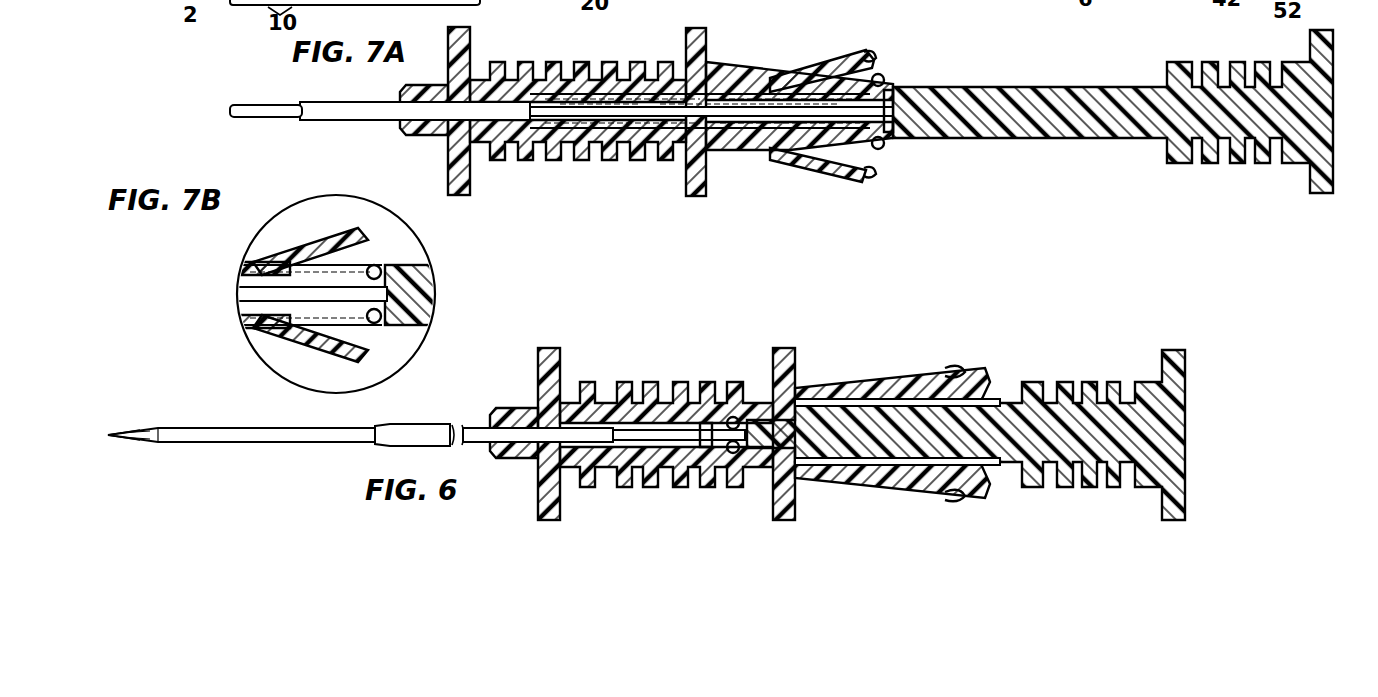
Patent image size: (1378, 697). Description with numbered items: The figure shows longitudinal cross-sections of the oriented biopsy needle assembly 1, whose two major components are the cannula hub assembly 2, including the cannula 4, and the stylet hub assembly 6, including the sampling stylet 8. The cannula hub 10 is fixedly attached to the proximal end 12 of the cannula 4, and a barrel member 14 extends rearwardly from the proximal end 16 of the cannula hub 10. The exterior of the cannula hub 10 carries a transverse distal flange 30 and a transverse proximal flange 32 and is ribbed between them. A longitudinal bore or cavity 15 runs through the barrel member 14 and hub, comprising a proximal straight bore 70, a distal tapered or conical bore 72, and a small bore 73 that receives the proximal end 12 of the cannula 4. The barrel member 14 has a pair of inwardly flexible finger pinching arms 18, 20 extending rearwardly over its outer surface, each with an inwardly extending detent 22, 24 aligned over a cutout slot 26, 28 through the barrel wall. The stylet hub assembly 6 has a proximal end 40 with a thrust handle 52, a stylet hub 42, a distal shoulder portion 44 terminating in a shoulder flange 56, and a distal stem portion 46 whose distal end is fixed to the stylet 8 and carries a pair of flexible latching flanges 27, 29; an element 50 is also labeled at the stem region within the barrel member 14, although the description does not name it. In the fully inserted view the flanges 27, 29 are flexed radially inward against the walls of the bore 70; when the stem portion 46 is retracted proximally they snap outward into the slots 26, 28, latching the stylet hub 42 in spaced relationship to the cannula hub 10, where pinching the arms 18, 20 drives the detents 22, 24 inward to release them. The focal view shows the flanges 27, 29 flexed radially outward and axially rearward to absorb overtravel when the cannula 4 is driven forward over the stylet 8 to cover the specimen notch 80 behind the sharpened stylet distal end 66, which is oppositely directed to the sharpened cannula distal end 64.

In FIG. 7A, the oriented biopsy needle assembly 1 is at (805, 190).
In FIG. 6, the oriented biopsy needle assembly 1 is at (478, 499).
In FIG. 7A, the cannula hub assembly 2 is at (390, 150).
In FIG. 6, the cannula hub assembly 2 is at (627, 326).
In FIG. 7A, the cannula 4 is at (352, 100).
In FIG. 7A, the stylet hub assembly 6 is at (1222, 189).
In FIG. 6, the stylet hub assembly 6 is at (1072, 356).
In FIG. 7A, the sampling stylet 8 is at (256, 118).
In FIG. 6, the sampling stylet 8 is at (358, 428).
In FIG. 7A, the cannula hub 10 is at (598, 184).
In FIG. 7A, the proximal end of the cannula 12 is at (500, 122).
In FIG. 6, the proximal end of the cannula 12 is at (510, 432).
In FIG. 7A, the barrel member 14 is at (838, 70).
In FIG. 6, the barrel member 14 is at (893, 497).
In FIG. 7A, the longitudinal bore or cavity 15 is at (720, 96).
In FIG. 6, the longitudinal bore or cavity 15 is at (838, 473).
In FIG. 7A, the proximal end of the cannula hub 16 is at (712, 48).
In FIG. 6, the proximal end of the cannula hub 16 is at (793, 370).
In FIG. 7A, the finger pinching arm 18 is at (787, 110).
In FIG. 7B, the finger pinching arm 18 is at (318, 238).
In FIG. 6, the finger pinching arm 18 is at (947, 372).
In FIG. 7A, the finger pinching arm 20 is at (813, 170).
In FIG. 7B, the finger pinching arm 20 is at (307, 353).
In FIG. 6, the finger pinching arm 20 is at (920, 493).
In FIG. 7A, the detent 22 is at (873, 50).
In FIG. 6, the detent 22 is at (933, 380).
In FIG. 7A, the detent 24 is at (870, 162).
In FIG. 6, the detent 24 is at (960, 484).
In FIG. 6, the cutout slot 26 is at (957, 400).
In FIG. 7A, the flexible latching flange 27 is at (868, 162).
In FIG. 7B, the flexible latching flange 27 is at (373, 327).
In FIG. 6, the flexible latching flange 27 is at (730, 443).
In FIG. 6, the cutout slot 28 is at (958, 467).
In FIG. 7A, the flexible latching flange 29 is at (870, 77).
In FIG. 7B, the flexible latching flange 29 is at (367, 267).
In FIG. 6, the flexible latching flange 29 is at (713, 420).
In FIG. 7A, the transverse distal flange 30 is at (459, 111).
In FIG. 6, the transverse distal flange 30 is at (550, 350).
In FIG. 7A, the transverse proximal flange 32 is at (690, 36).
In FIG. 6, the transverse proximal flange 32 is at (783, 348).
In FIG. 7A, the proximal end of the stylet hub assembly 40 is at (1337, 151).
In FIG. 6, the proximal end of the stylet hub assembly 40 is at (1189, 426).
In FIG. 7A, the stylet hub 42 is at (1302, 167).
In FIG. 6, the stylet hub 42 is at (1153, 493).
In FIG. 7A, the distal shoulder portion 44 is at (1142, 140).
In FIG. 7A, the distal stem portion 46 is at (1034, 123).
In FIG. 6, the distal stem portion 46 is at (812, 420).
In FIG. 7A, the seal 50 is at (893, 135).
In FIG. 6, the seal 50 is at (725, 443).
In FIG. 7A, the thrust handle 52 is at (1320, 194).
In FIG. 6, the thrust handle 52 is at (1180, 360).
In FIG. 7A, the shoulder flange 56 is at (1178, 155).
In FIG. 6, the shoulder flange 56 is at (1035, 480).
In FIG. 6, the sharpened distal end of the cannula 64 is at (392, 442).
In FIG. 6, the sharpened distal end of the stylet 66 is at (143, 434).
In FIG. 7A, the proximal straight bore 70 is at (660, 132).
In FIG. 6, the proximal straight bore 70 is at (835, 405).
In FIG. 7A, the distal tapered or conical bore 72 is at (580, 130).
In FIG. 6, the distal tapered or conical bore 72 is at (660, 450).
In FIG. 7A, the small bore 73 is at (468, 108).
In FIG. 6, the small bore 73 is at (558, 430).
In FIG. 6, the biopsy sample/specimen receiving notch 80 is at (250, 434).